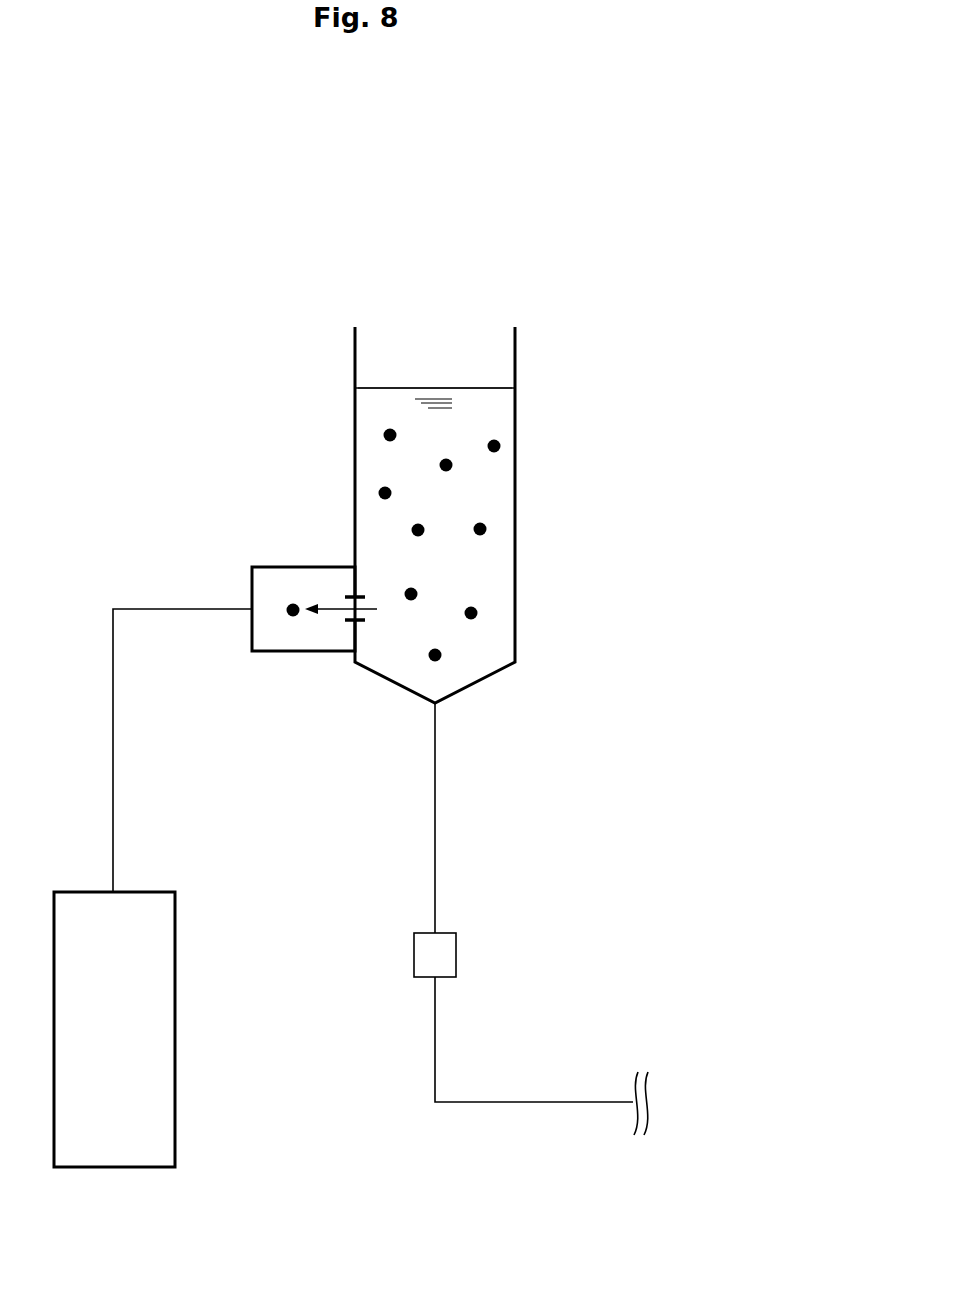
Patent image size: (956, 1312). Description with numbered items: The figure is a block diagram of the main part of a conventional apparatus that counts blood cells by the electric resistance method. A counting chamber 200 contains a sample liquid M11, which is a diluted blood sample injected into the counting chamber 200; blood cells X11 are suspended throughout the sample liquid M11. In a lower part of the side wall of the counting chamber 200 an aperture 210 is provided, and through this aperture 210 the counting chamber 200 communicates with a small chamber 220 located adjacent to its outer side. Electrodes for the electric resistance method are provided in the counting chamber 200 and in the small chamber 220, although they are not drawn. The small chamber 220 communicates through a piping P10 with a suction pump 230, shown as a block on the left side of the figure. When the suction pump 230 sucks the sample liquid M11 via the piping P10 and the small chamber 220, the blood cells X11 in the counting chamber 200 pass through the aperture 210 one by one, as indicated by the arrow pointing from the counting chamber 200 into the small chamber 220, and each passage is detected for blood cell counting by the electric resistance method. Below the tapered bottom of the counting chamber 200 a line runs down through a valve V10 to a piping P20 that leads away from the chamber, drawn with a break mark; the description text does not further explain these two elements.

The counting chamber 200 is at (515, 493).
The sample liquid M11 is at (377, 400).
The blood cells X11 is at (491, 442).
The small chamber 220 is at (280, 567).
The aperture 210 is at (345, 597).
The piping P10 is at (112, 638).
The suction pump 230 is at (158, 1045).
The valve V10 is at (456, 960).
The pipe P20 is at (518, 1102).